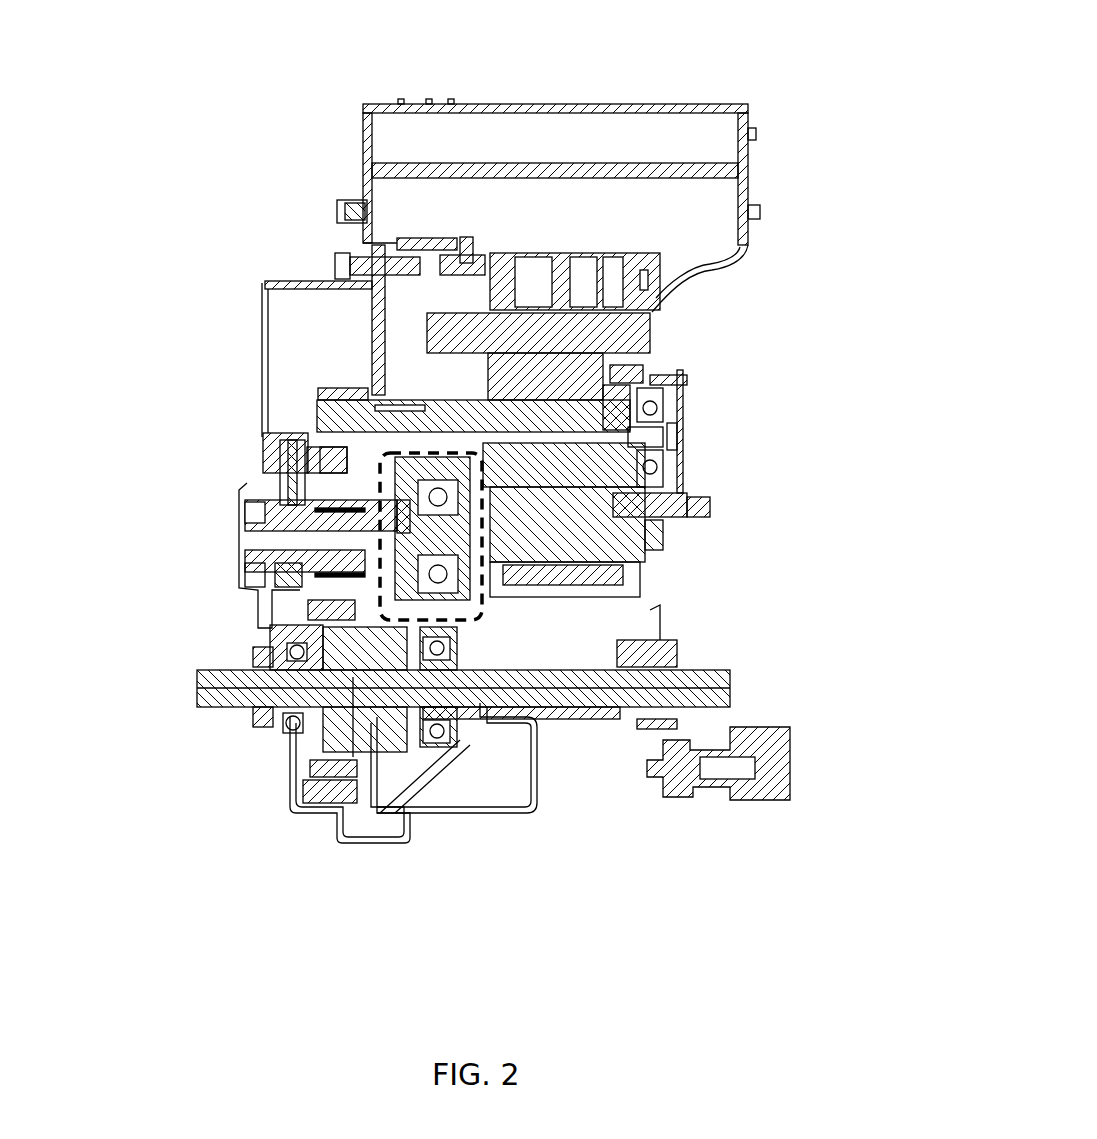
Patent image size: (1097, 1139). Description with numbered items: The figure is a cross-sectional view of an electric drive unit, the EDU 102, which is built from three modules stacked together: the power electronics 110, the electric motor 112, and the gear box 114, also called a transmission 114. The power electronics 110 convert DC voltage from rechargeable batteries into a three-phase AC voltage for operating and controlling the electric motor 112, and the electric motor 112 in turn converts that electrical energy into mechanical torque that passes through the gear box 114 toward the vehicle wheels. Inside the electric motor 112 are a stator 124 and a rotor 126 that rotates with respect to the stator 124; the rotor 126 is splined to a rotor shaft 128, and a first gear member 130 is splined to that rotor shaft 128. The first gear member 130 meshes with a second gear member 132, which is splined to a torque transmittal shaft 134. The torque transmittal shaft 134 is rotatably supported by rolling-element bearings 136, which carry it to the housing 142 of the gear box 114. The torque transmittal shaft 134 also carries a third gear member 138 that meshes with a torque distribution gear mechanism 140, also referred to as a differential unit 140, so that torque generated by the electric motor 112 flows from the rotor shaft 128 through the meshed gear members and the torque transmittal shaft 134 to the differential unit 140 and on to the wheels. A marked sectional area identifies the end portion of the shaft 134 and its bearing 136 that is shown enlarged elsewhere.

The EDU 102 is at (780, 78).
The power electronics 110 is at (797, 205).
The electric motor 112 is at (700, 449).
The gear box 114 is at (210, 536).
The stator 124 is at (635, 345).
The rotor 126 is at (573, 503).
The rotor shaft 128 is at (662, 442).
The first gear member 130 is at (392, 460).
The second gear member 132 is at (390, 492).
The torque transmittal shaft 134 is at (260, 570).
The rolling-element bearing 136 is at (440, 598).
The third gear member 138 is at (318, 590).
The torque distribution gear mechanism 140 is at (360, 676).
The housing 142 is at (445, 480).